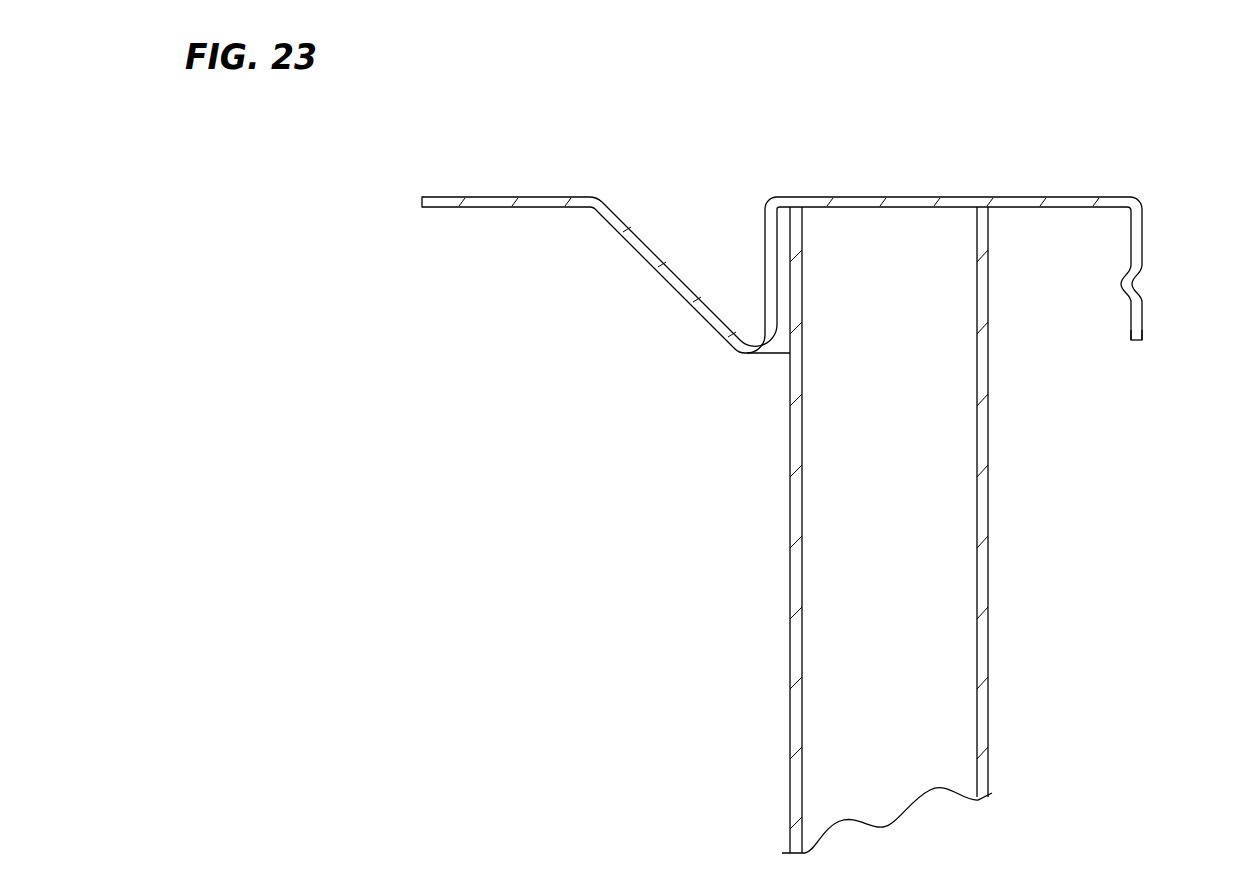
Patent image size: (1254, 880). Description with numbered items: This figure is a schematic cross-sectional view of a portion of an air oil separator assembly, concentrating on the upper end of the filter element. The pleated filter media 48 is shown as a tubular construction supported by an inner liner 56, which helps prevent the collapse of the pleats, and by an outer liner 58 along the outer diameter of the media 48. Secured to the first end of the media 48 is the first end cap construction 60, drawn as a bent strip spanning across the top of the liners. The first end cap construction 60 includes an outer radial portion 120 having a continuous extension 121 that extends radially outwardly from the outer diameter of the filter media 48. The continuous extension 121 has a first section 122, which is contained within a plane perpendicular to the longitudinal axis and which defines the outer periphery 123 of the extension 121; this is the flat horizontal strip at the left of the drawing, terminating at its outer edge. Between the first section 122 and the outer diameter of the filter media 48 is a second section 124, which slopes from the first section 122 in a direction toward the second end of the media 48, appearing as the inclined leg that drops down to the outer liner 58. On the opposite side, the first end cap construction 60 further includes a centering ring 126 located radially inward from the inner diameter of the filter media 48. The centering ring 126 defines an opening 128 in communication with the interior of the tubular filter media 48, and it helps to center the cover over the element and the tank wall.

The outer radial portion 120 is at (452, 195).
The continuous extension 121 is at (553, 195).
The first section 122 is at (450, 208).
The outer periphery 123 is at (422, 203).
The second section 124 is at (643, 255).
The first end cap construction 60 is at (1073, 194).
The centering ring 126 is at (1143, 240).
The opening 128 is at (1142, 322).
The outer liner 58 is at (790, 653).
The inner liner 56 is at (988, 513).
The filter media 48 is at (950, 658).